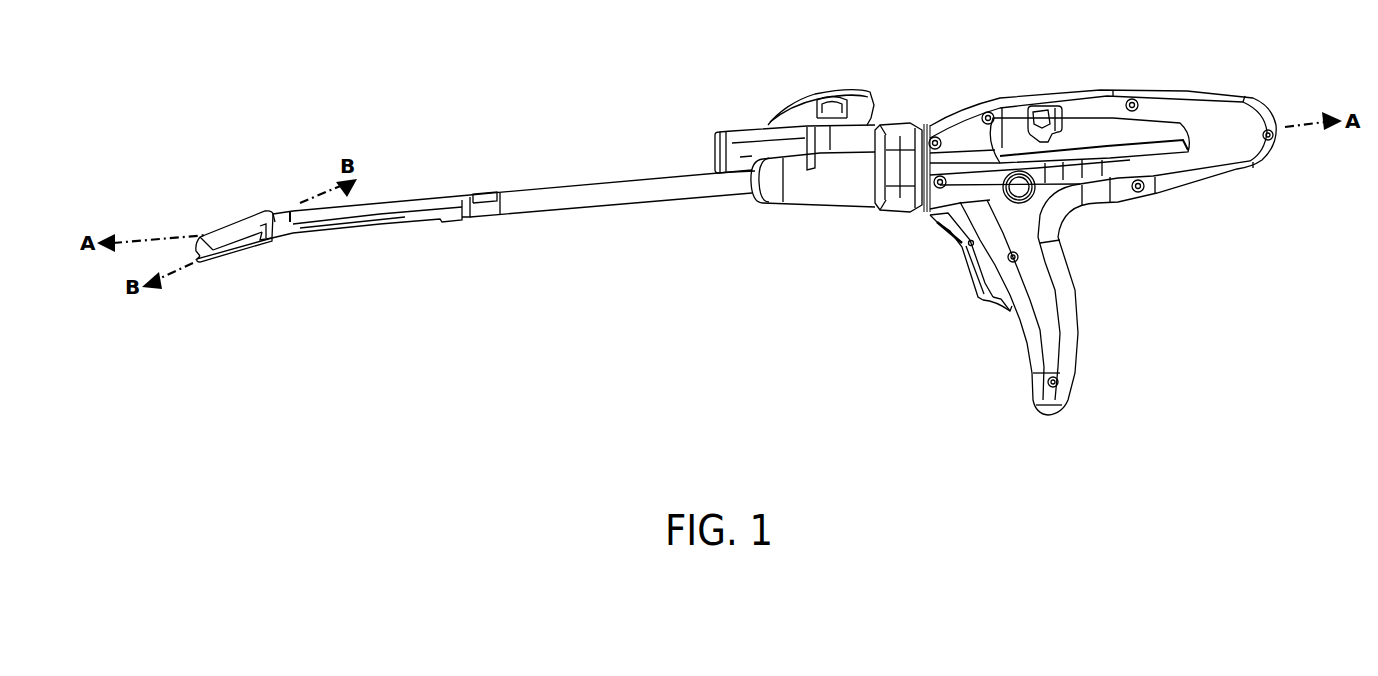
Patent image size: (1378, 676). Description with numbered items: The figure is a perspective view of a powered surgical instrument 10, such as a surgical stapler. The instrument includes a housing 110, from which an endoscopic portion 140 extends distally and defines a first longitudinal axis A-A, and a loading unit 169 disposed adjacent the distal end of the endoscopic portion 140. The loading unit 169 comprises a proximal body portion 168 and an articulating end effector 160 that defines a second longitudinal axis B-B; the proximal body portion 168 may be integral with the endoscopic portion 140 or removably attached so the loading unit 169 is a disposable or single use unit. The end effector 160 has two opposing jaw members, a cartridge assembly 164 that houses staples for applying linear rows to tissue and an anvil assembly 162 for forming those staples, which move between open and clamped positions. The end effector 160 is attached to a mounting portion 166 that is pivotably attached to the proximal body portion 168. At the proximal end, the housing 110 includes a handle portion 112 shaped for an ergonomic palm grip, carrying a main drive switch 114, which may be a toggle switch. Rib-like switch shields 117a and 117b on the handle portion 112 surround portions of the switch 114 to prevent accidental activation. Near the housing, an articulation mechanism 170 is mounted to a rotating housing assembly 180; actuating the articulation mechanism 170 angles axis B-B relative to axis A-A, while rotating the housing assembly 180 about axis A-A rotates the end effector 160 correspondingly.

The powered surgical instrument 10 is at (590, 57).
The housing 110 is at (1108, 90).
The handle portion 112 is at (1078, 297).
The main drive switch 114 is at (938, 271).
The switch shield 117a is at (930, 225).
The switch shield 117b is at (1000, 297).
The endoscopic portion 140 is at (573, 168).
The end effector 160 is at (235, 220).
The anvil assembly 162 is at (226, 233).
The cartridge assembly 164 is at (232, 250).
The mounting portion 166 is at (273, 236).
The proximal body portion 168 is at (405, 226).
The loading unit 169 is at (383, 192).
The articulation mechanism 170 is at (840, 71).
The rotating housing assembly 180 is at (938, 96).